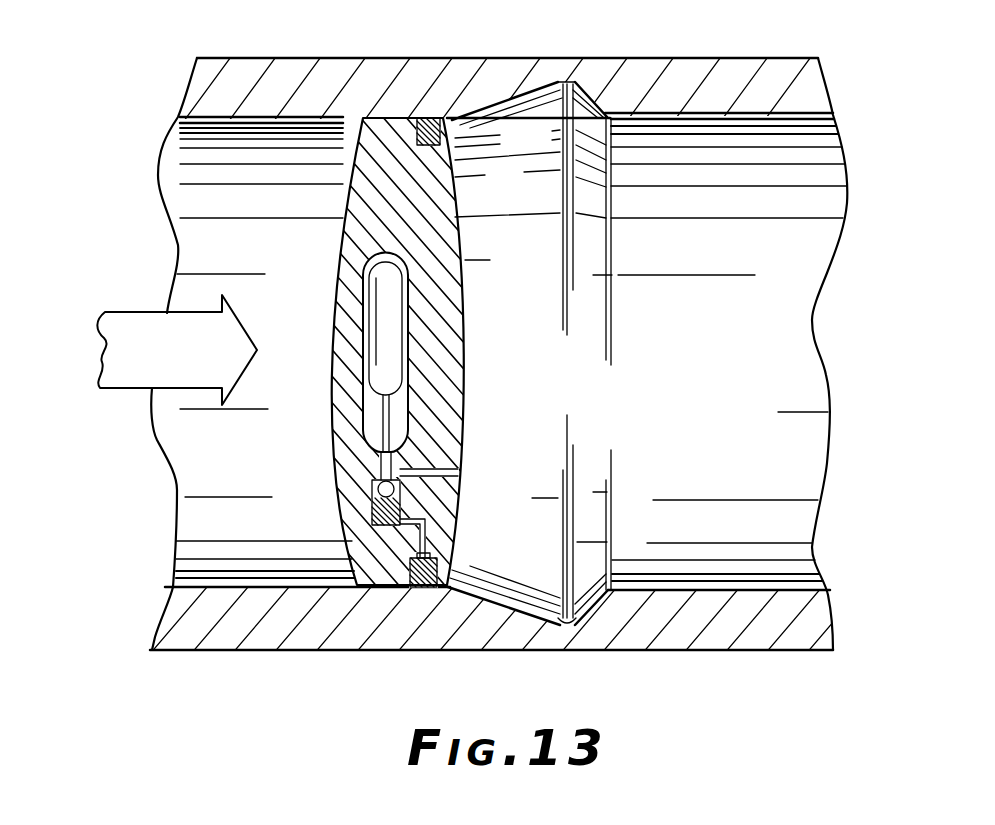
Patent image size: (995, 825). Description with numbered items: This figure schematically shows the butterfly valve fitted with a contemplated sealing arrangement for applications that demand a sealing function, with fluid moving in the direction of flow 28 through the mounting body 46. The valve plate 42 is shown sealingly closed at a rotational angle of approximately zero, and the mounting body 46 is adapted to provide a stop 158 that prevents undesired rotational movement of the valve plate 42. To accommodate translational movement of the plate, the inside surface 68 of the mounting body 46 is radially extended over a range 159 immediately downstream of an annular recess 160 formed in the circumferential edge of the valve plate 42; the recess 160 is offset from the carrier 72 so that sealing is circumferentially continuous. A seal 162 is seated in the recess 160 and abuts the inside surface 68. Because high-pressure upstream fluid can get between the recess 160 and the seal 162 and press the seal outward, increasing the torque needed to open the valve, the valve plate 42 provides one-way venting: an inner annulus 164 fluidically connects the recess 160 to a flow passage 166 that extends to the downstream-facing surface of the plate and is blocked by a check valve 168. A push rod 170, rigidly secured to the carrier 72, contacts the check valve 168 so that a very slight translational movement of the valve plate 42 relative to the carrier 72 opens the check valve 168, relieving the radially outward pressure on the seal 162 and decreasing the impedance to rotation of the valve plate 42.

The direction of flow 28 is at (135, 312).
The stop 158 is at (343, 120).
The seal 162 is at (427, 122).
The range 159 is at (558, 127).
The valve plate 42 is at (462, 202).
The carrier 72 is at (380, 289).
The push rod 170 is at (362, 424).
The flow passage 166 is at (448, 474).
The check valve 168 is at (372, 510).
The inner annulus 164 is at (415, 553).
The annular recess 160 is at (437, 570).
The inside surface 68 is at (637, 580).
The mounting body 46 is at (775, 632).